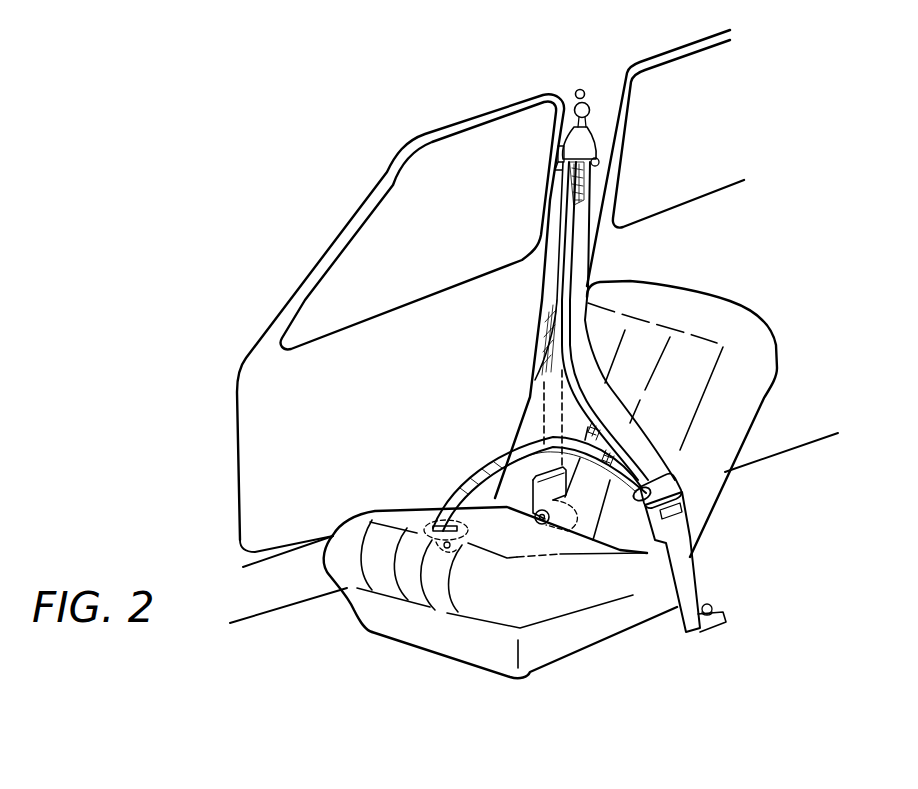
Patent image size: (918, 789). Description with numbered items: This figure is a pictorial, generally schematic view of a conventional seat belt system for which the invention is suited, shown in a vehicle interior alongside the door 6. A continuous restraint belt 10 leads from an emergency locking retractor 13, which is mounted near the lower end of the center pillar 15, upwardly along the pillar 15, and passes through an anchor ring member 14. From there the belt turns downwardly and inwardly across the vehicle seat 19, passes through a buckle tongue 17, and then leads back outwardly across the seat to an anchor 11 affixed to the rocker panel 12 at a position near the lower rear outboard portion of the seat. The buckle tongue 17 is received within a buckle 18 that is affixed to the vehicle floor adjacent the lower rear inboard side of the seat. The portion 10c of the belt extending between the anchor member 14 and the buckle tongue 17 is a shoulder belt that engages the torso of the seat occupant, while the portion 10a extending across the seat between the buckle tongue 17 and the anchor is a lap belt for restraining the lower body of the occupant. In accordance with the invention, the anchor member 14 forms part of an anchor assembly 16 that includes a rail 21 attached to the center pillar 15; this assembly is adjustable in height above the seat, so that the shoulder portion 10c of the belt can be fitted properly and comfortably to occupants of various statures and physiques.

The door 6 is at (160, 0).
The continuous restraint belt 10 is at (578, 278).
The lap belt portion 10a is at (450, 500).
The shoulder belt portion 10c is at (573, 315).
The anchor 11 is at (454, 552).
The rocker panel 12 is at (291, 572).
The emergency locking retractor 13 is at (577, 537).
The anchor ring member 14 is at (598, 161).
The center pillar 15 is at (610, 103).
The anchor assembly 16 is at (593, 143).
The buckle tongue 17 is at (673, 478).
The buckle 18 is at (684, 524).
The vehicle seat 19 is at (762, 365).
The rail 21 is at (583, 90).